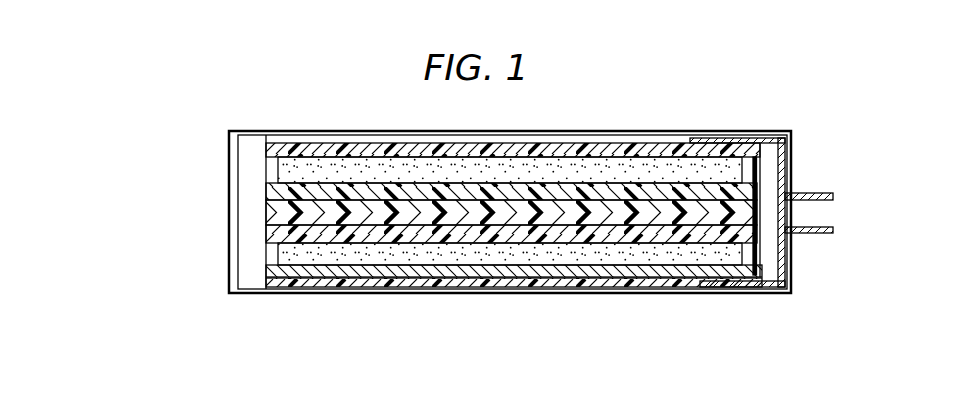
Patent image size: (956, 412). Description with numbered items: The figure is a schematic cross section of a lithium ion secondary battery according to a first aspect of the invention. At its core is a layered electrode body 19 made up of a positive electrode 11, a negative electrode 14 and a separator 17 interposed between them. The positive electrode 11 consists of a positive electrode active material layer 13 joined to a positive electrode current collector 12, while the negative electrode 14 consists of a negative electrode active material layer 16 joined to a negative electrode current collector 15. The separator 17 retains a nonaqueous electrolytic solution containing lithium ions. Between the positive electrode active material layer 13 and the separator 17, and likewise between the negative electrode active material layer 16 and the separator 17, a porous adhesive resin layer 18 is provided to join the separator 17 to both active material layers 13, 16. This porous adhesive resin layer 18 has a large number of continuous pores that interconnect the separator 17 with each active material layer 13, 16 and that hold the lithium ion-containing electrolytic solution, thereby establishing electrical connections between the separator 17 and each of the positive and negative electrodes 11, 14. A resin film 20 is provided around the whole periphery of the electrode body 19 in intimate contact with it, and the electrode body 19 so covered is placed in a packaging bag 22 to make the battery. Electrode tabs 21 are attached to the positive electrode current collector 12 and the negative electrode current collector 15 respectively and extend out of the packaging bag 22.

The positive electrode 11 is at (436, 159).
The positive electrode current collector 12 is at (276, 151).
The positive electrode active material layer 13 is at (281, 171).
The negative electrode 14 is at (437, 272).
The negative electrode current collector 15 is at (283, 273).
The negative electrode active material layer 16 is at (279, 258).
The separator 17 is at (292, 214).
The porous adhesive resin layer 18 is at (282, 196).
The electrode body 19 is at (414, 215).
The resin film 20 is at (485, 288).
The electrode tabs 21 is at (812, 192).
The packaging bag 22 is at (732, 289).